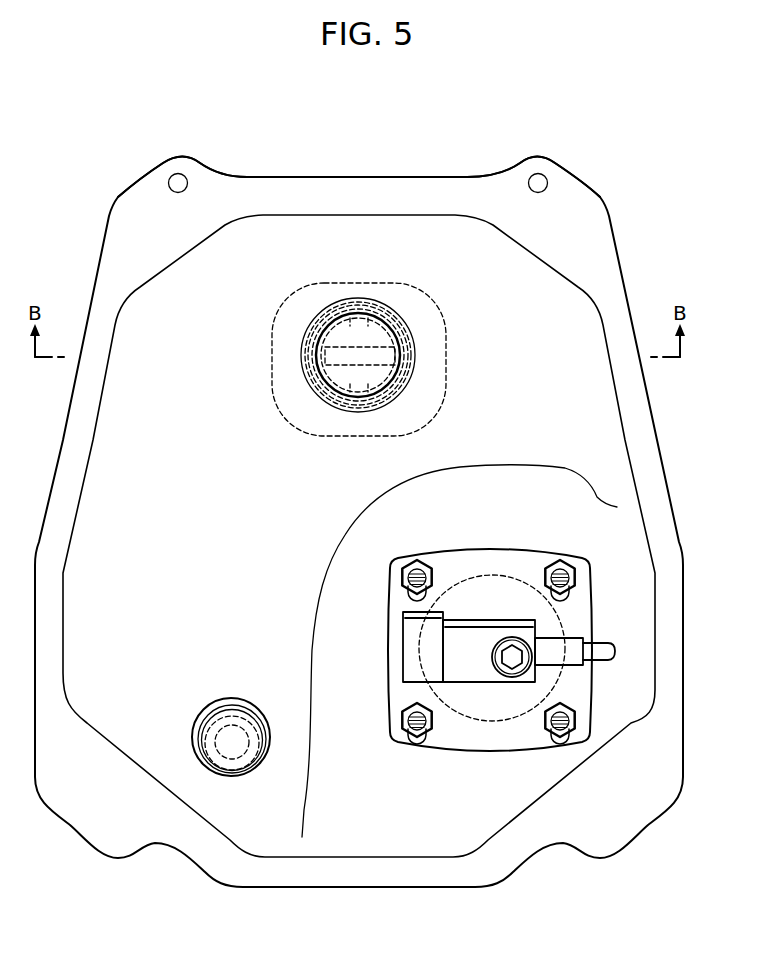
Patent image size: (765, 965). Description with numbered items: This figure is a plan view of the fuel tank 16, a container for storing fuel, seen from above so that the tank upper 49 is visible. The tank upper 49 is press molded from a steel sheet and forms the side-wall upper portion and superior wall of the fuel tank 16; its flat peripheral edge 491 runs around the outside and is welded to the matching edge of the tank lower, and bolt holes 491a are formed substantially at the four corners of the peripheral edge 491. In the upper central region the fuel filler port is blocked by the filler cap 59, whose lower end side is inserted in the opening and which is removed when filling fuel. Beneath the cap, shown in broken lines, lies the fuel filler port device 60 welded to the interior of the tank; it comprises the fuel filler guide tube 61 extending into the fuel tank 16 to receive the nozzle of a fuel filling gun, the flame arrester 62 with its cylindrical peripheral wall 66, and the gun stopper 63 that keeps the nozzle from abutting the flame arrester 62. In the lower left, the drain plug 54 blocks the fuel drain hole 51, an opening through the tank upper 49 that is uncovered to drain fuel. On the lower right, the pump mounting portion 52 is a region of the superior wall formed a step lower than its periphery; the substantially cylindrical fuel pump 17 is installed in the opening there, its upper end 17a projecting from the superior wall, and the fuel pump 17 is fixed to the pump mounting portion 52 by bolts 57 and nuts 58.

The fuel tank 16 is at (120, 116).
The tank upper 49 is at (348, 247).
The peripheral edge 491 is at (432, 195).
The bolt holes 491a is at (538, 178).
The filler cap 59 is at (372, 332).
The fuel filler port device 60 is at (450, 353).
The fuel filler guide tube 61 is at (287, 357).
The flame arrester 62 is at (347, 335).
The gun stopper 63 is at (308, 325).
The peripheral wall 66 is at (412, 377).
The drain plug 54 is at (217, 772).
The fuel drain hole 51 is at (241, 767).
The pump mounting portion 52 is at (358, 828).
The nuts 58 is at (404, 726).
The bolts 57 is at (418, 744).
The fuel pump 17 is at (525, 732).
The upper end 17a is at (468, 667).